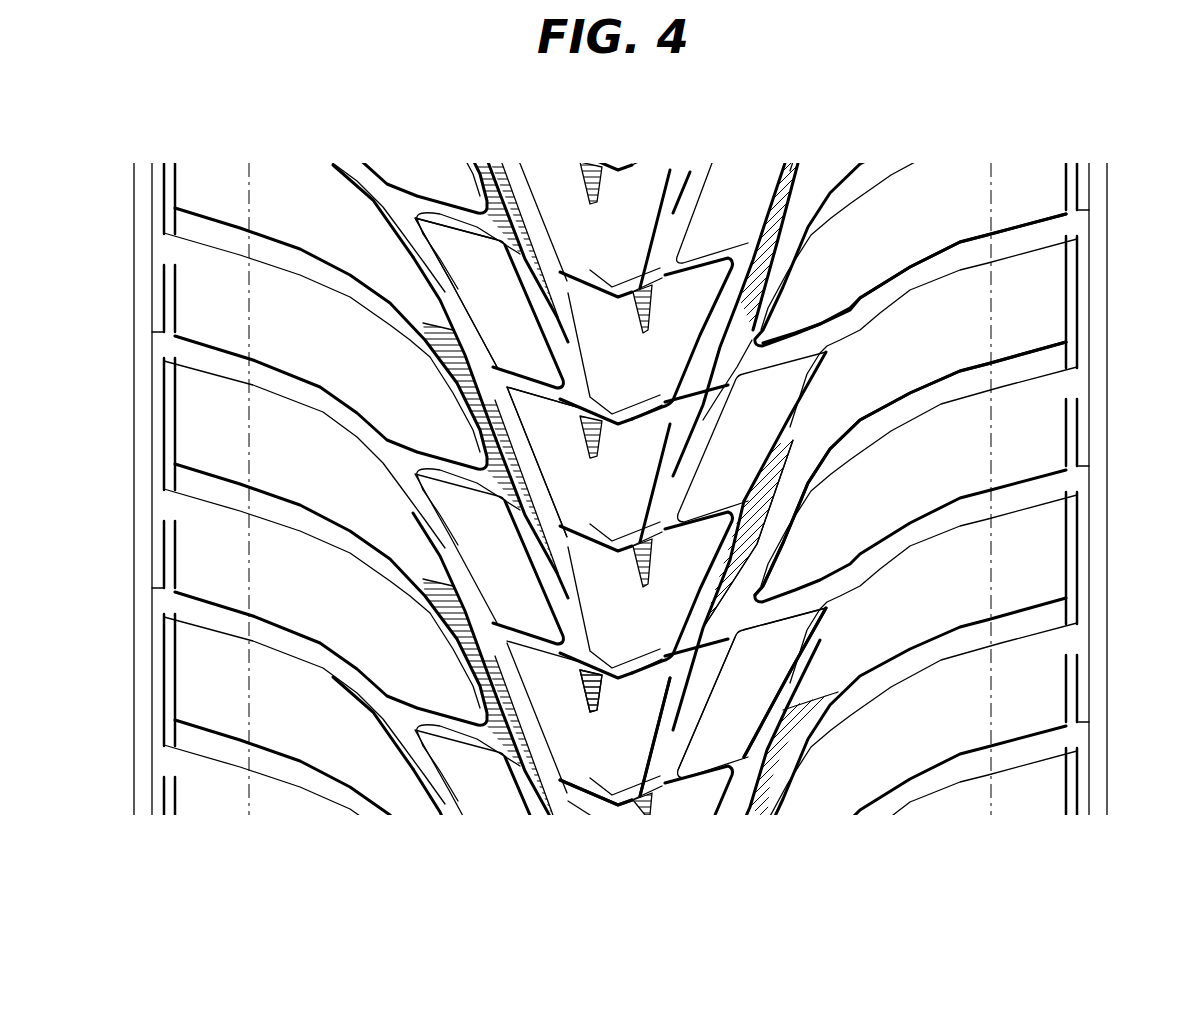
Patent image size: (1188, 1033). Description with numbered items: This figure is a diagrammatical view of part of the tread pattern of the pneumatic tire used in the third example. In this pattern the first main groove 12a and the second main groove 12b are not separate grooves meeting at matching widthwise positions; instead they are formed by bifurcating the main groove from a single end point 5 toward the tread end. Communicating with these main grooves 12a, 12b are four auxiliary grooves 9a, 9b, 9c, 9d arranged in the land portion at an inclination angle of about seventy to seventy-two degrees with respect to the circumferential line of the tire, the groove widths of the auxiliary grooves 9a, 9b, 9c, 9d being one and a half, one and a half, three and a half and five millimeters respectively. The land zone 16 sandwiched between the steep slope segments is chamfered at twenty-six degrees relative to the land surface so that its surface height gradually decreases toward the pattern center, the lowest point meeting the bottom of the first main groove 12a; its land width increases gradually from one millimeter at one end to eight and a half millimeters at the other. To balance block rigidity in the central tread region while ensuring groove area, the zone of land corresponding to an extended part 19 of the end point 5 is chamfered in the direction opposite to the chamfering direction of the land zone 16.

The end point 5 is at (650, 790).
The auxiliary groove 9a is at (640, 690).
The auxiliary groove 9b is at (707, 490).
The auxiliary groove 9c is at (550, 383).
The auxiliary groove 9d is at (440, 215).
The first main groove 12a is at (770, 550).
The second main groove 12b is at (805, 400).
The land zone 16 is at (725, 610).
The extended part 19 is at (578, 668).